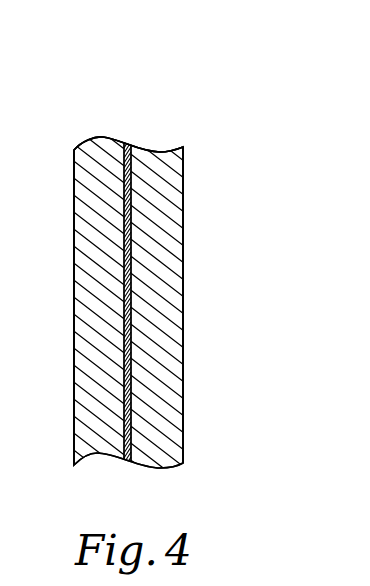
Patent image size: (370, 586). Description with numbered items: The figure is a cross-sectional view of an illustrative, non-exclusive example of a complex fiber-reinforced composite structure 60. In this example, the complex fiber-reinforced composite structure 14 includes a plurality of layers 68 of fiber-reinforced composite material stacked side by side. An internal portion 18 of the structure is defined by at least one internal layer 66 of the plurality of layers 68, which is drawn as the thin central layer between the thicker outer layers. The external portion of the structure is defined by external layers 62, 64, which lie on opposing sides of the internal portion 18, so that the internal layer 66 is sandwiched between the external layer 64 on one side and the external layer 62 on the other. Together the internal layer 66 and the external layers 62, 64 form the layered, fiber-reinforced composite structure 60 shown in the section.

The complex fiber-reinforced composite structure 14 is at (231, 57).
The internal portion 18 is at (138, 172).
The complex fiber-reinforced composite structure 60 is at (195, 98).
The external layer 62 is at (184, 288).
The external layer 64 is at (74, 340).
The internal layer 66 is at (133, 243).
The plurality of layers 68 is at (116, 113).